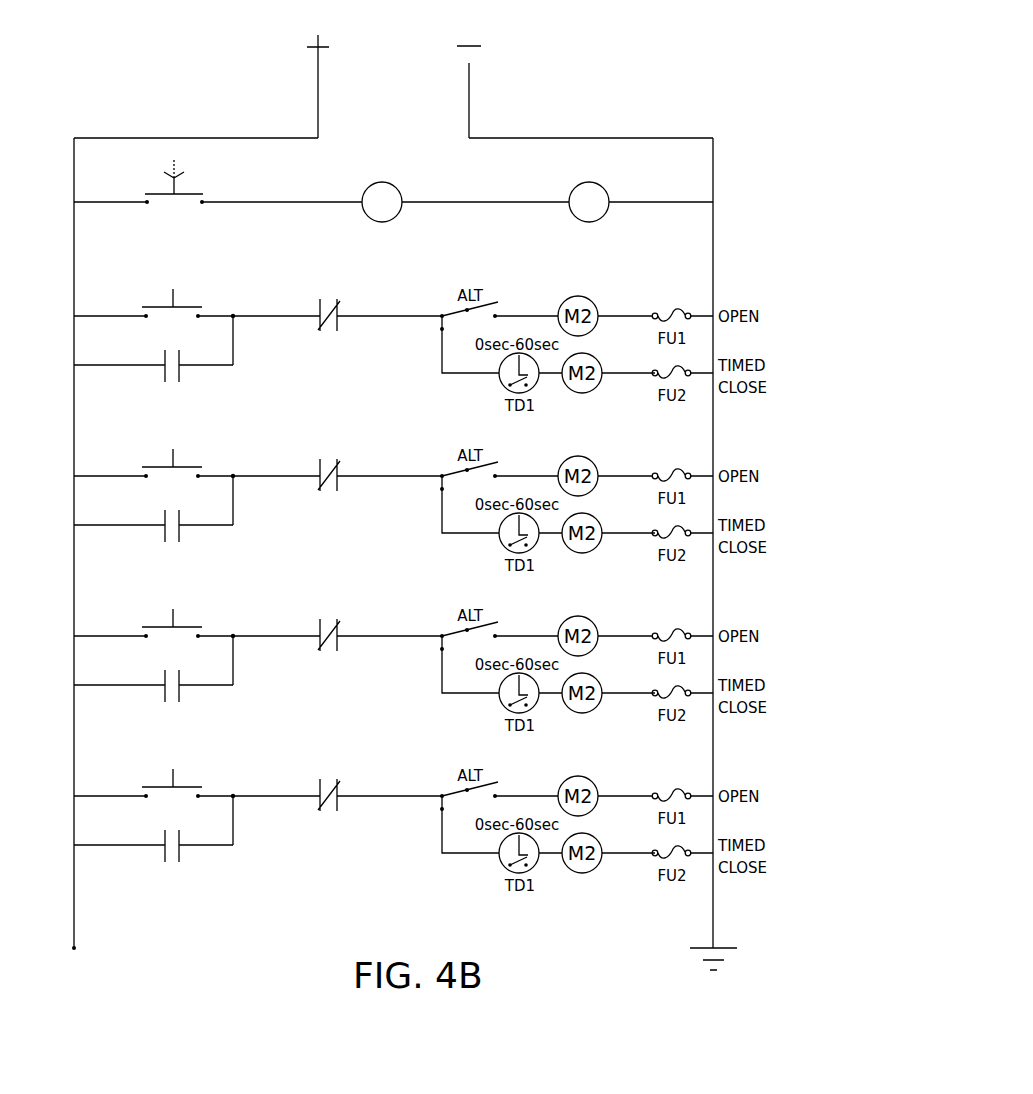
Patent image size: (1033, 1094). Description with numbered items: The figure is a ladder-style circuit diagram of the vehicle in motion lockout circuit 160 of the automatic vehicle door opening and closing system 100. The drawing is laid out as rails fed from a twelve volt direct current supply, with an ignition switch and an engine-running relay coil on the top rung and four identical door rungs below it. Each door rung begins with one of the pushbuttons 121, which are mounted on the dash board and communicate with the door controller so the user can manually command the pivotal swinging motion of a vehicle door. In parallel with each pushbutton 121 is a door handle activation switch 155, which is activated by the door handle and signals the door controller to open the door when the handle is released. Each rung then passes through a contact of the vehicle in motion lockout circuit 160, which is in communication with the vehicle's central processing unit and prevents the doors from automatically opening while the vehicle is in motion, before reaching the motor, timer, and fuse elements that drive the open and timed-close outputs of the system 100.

The automatic vehicle door opening and closing system 100 is at (645, 48).
The vehicle in motion lockout circuit 160 is at (595, 174).
The pushbuttons 121 is at (158, 321).
The door handle activation switch 155 is at (163, 403).